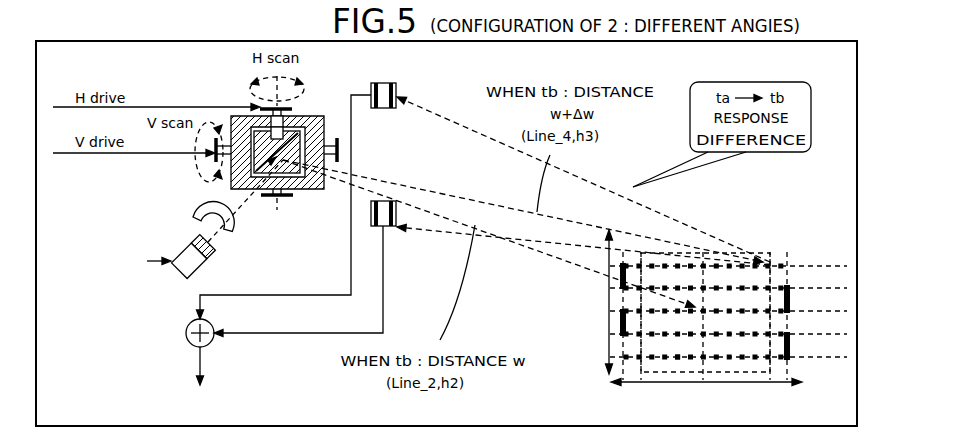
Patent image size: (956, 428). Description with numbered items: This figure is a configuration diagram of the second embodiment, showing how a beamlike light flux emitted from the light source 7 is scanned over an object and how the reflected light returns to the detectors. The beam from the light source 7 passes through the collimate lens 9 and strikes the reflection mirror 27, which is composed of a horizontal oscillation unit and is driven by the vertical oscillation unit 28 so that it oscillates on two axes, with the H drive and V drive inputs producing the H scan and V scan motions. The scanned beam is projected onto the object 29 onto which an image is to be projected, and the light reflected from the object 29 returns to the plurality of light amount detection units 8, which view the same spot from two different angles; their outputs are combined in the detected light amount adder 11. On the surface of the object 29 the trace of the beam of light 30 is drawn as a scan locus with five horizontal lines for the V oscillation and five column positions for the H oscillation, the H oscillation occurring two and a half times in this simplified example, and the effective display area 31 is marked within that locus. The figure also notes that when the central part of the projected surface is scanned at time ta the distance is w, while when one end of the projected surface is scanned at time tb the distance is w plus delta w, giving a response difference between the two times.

The light source 7 is at (183, 243).
The light amount detection units 8 is at (384, 83).
The collimate lens 9 is at (205, 212).
The detected light amount adder 11 is at (186, 333).
The reflection mirror 27 is at (302, 125).
The vertical oscillation unit 28 is at (308, 189).
The object onto which an image is to be projected 29 is at (780, 252).
The trace of a beam of light 30 is at (677, 362).
The effective display area 31 is at (741, 372).